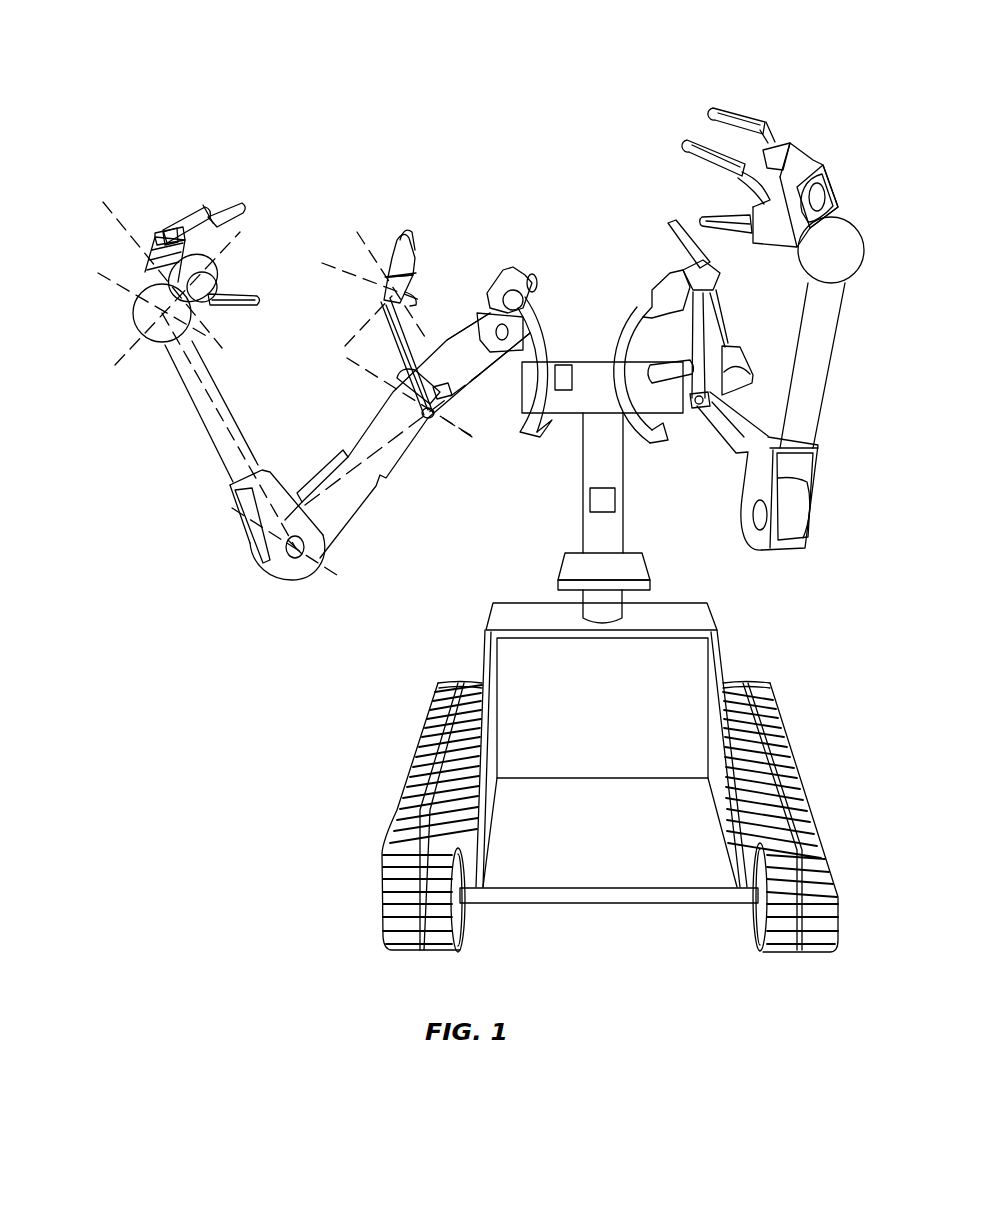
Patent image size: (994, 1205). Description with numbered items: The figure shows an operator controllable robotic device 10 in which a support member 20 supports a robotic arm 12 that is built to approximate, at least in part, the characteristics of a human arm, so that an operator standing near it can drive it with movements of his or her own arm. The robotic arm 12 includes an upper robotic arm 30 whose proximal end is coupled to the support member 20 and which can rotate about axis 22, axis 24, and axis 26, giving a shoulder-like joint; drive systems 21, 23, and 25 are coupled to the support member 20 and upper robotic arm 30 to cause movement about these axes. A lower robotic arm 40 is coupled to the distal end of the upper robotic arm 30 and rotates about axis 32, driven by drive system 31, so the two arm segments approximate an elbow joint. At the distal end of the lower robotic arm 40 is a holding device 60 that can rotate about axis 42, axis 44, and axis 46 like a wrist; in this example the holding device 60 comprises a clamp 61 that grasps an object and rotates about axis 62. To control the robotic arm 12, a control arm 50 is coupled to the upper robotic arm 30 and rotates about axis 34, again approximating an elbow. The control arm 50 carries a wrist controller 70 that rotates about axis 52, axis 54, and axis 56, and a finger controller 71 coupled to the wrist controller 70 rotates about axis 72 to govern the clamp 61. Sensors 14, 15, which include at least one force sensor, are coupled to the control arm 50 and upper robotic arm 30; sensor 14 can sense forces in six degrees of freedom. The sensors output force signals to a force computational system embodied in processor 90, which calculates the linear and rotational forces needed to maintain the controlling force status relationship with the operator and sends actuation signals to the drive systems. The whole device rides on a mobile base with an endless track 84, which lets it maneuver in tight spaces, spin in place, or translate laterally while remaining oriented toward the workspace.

The operator controllable robotic device 10 is at (428, 97).
The robotic arm 12 is at (294, 647).
The sensor 14 is at (392, 320).
The sensor 15 is at (459, 412).
The support member 20 is at (572, 411).
The drive system 21 is at (537, 281).
The axis 22 is at (456, 298).
The drive system 23 is at (565, 370).
The axis 24 is at (505, 255).
The drive system 25 is at (438, 341).
The axis 26 is at (402, 445).
The upper robotic arm 30 is at (380, 480).
The drive system 31 is at (320, 469).
The axis 32 is at (218, 505).
The axis 34 is at (372, 378).
The lower robotic arm 40 is at (195, 425).
The axis 42 is at (100, 290).
The axis 44 is at (101, 210).
The axis 46 is at (110, 357).
The control arm 50 is at (462, 388).
The axis 52 is at (345, 278).
The axis 54 is at (360, 240).
The axis 56 is at (352, 338).
The holding device 60 is at (152, 243).
The clamp 61 is at (240, 203).
The axis 62 is at (180, 196).
The wrist controller 70 is at (381, 246).
The finger controller 71 is at (425, 263).
The axis 72 is at (430, 265).
The track 84 is at (779, 717).
The processor 90 is at (599, 500).